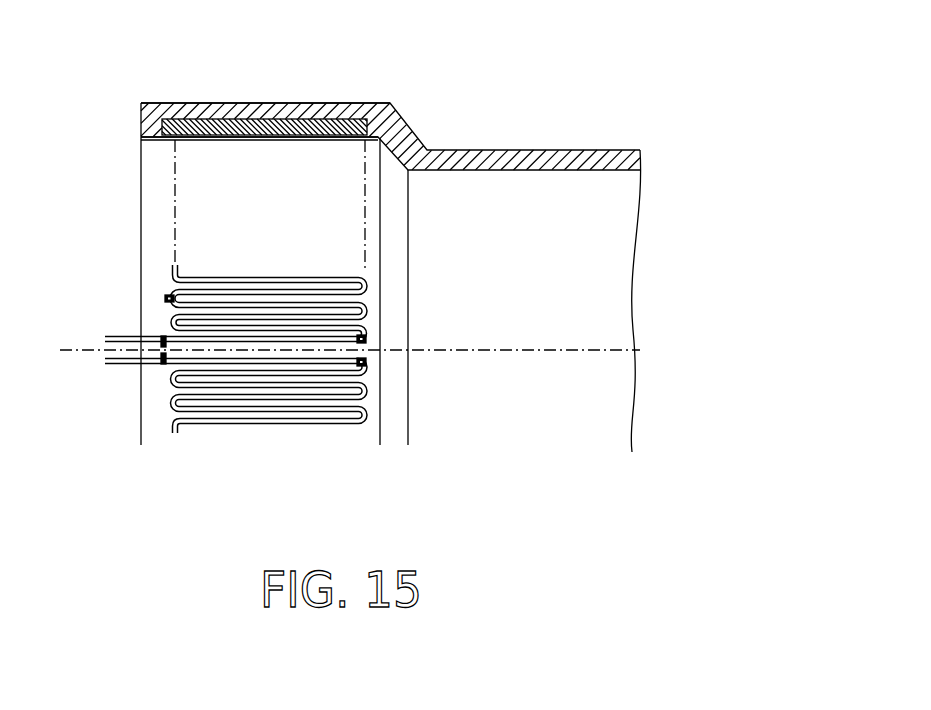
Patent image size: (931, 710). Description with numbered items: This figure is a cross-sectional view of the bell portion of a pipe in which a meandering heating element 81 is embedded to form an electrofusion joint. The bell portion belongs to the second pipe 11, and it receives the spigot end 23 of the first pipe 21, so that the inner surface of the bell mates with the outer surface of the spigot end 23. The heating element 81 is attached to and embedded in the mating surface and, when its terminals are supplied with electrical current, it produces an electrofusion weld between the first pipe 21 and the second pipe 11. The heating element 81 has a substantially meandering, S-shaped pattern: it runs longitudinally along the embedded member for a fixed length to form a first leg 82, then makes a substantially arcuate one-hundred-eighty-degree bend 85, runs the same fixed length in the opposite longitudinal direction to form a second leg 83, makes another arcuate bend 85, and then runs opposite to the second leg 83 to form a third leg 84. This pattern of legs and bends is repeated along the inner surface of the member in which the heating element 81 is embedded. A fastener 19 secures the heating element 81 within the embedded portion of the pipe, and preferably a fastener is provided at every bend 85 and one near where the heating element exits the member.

The second pipe 11 is at (428, 124).
The fastener 19 is at (167, 295).
The first pipe 21 is at (262, 103).
The spigot end 23 is at (318, 103).
The meandering heating element 81 is at (282, 264).
The first leg 82 is at (365, 299).
The second leg 83 is at (215, 309).
The third leg 84 is at (375, 336).
The arcuate 180 degree bend 85 is at (167, 300).